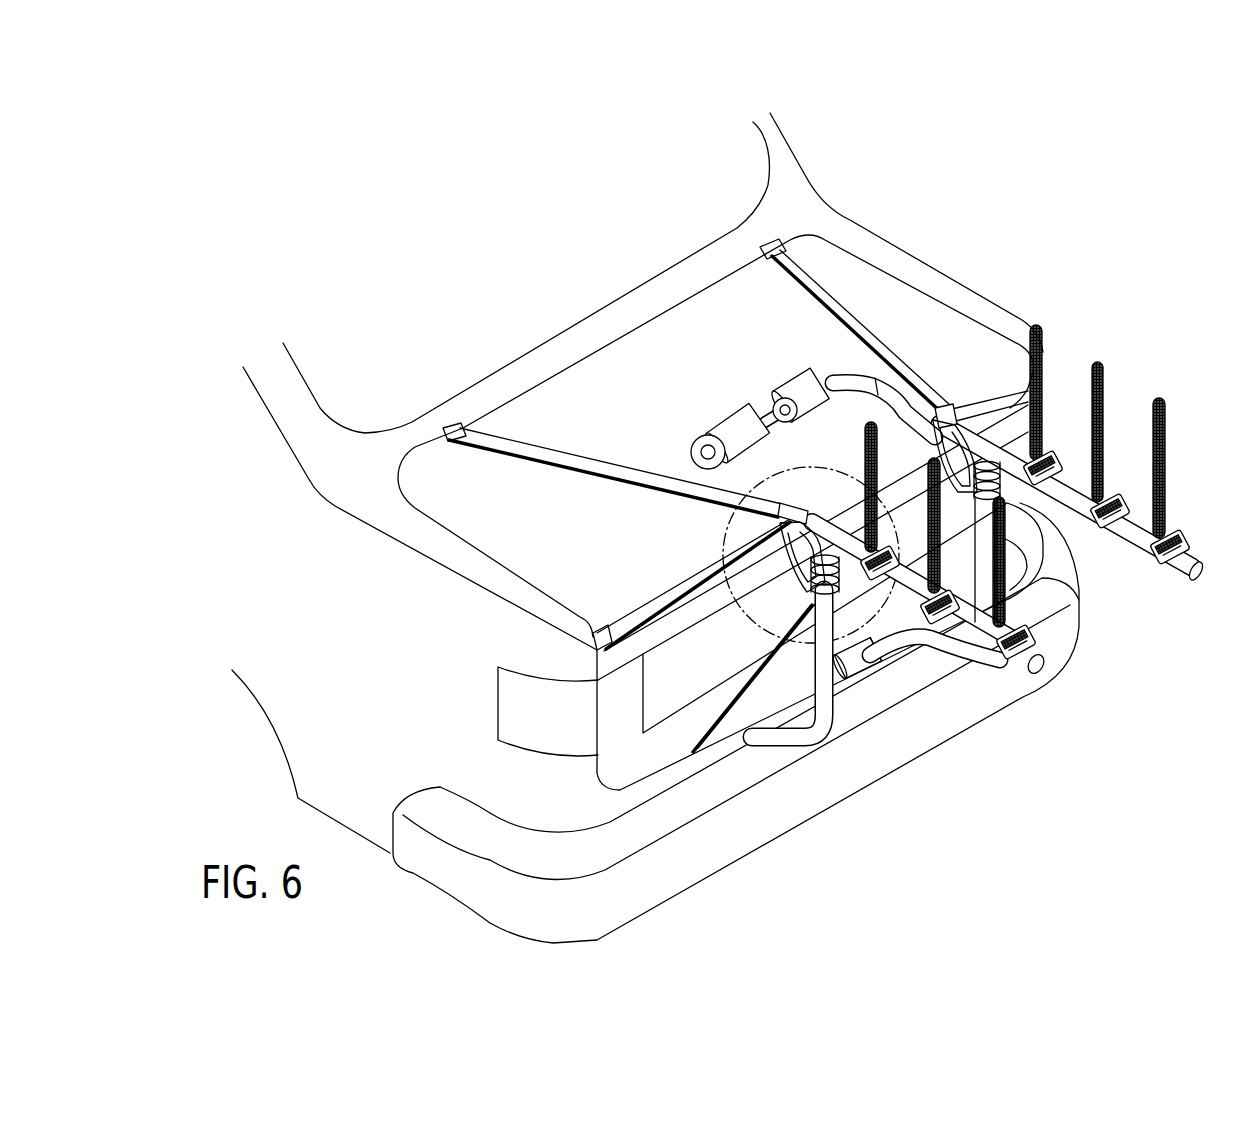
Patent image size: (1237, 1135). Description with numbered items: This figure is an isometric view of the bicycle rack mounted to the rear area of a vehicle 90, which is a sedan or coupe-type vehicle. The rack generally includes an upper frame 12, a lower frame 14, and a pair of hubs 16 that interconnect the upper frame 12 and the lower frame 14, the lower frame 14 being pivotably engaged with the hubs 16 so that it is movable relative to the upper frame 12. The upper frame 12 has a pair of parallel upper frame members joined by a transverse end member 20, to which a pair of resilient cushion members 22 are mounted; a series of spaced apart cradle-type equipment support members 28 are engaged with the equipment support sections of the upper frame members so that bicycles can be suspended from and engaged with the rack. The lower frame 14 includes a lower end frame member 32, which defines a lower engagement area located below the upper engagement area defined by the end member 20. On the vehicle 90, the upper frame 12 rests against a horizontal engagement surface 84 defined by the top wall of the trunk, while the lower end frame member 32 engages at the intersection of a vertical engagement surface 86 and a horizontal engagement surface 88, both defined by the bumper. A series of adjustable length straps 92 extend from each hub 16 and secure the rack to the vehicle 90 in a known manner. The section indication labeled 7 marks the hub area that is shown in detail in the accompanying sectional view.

The vehicle 90 is at (944, 263).
The horizontal engagement surface 84 is at (960, 323).
The horizontal engagement surface 88 is at (793, 762).
The section line 7 is at (760, 482).
The adjustable length straps 92 is at (834, 292).
The vertical engagement surface 86 is at (707, 758).
The lower end frame member 32 is at (849, 682).
The lower frame 14 is at (943, 657).
The upper frame 12 is at (826, 358).
The resilient cushion members 22 is at (790, 388).
The transverse end member 20 is at (704, 447).
The hubs 16 is at (772, 568).
The cradle-type equipment support members 28 is at (1127, 500).